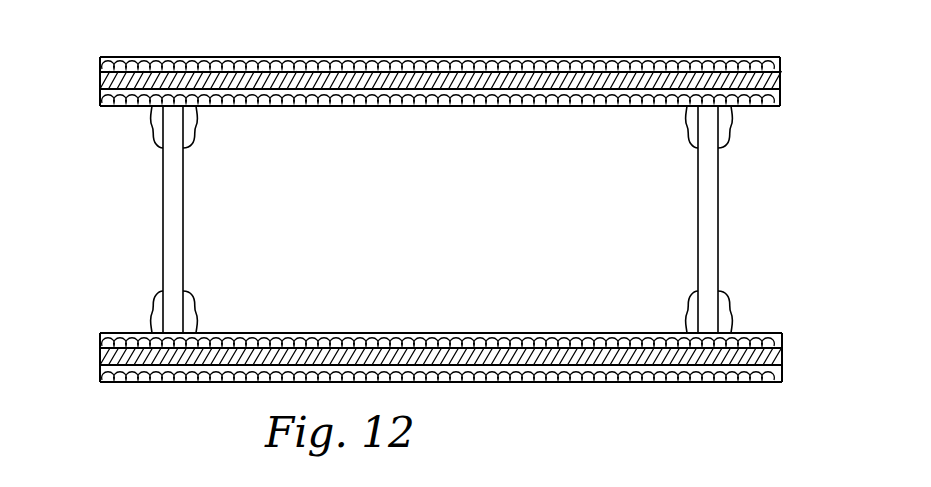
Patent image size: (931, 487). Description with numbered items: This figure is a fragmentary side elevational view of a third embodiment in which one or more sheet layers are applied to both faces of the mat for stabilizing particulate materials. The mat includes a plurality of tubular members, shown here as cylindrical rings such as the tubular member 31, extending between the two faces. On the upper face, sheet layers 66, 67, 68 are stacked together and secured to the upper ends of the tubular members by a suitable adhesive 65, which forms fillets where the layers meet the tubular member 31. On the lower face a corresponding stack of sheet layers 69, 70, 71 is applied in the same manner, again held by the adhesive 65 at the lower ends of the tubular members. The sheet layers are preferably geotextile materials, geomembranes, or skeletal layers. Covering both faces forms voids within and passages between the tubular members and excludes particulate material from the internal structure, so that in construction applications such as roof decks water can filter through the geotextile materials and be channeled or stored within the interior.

The tubular member 31 is at (163, 220).
The adhesive 65 is at (196, 146).
The sheet layer 66 is at (781, 103).
The sheet layer 67 is at (781, 83).
The sheet layer 68 is at (781, 60).
The inner corrugated sheet of lower panel 69 is at (100, 338).
The core layer of lower panel 70 is at (100, 358).
The outer corrugated sheet of lower panel 71 is at (100, 378).